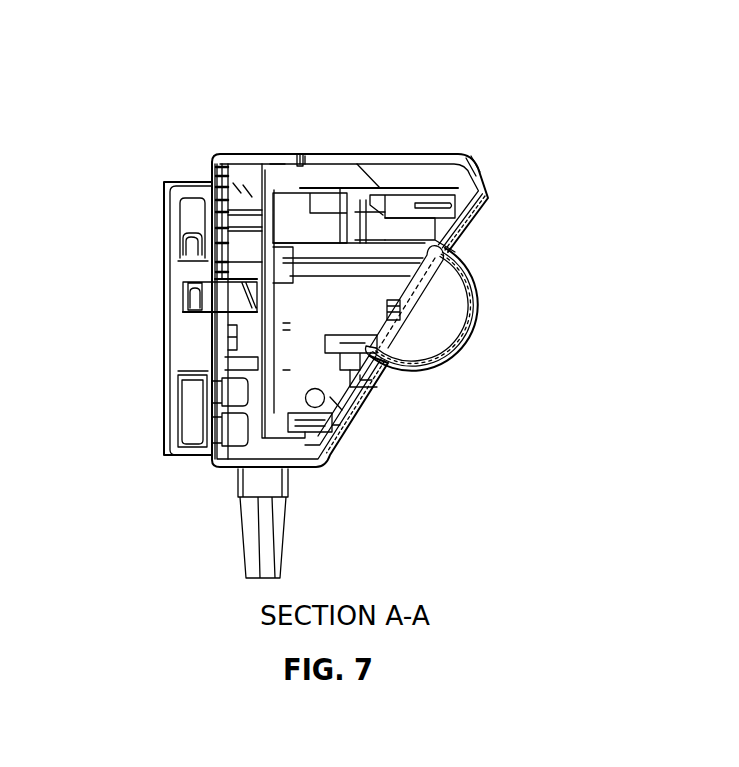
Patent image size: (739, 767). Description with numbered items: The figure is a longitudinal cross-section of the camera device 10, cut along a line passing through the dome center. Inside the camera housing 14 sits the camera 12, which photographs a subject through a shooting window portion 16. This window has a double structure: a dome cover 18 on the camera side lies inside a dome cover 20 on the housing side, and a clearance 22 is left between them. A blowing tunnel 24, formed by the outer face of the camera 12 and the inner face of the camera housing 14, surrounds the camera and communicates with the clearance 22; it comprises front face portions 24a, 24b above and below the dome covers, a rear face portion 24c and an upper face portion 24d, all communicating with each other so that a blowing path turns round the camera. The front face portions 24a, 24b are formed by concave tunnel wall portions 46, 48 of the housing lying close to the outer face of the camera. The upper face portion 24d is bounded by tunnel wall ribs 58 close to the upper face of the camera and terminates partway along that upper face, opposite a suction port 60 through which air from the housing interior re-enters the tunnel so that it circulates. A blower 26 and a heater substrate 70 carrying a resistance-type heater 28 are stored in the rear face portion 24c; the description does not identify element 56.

The camera device 10 is at (524, 106).
The camera 12 is at (348, 437).
The camera housing 14 is at (350, 152).
The shooting window portion 16 is at (490, 310).
The dome cover 18 is at (475, 330).
The dome cover 20 is at (463, 343).
The clearance 22 is at (450, 350).
The blowing tunnel 24 is at (353, 430).
The front face portion 24a is at (472, 237).
The front face portion 24b is at (360, 407).
The rear face portion 24c is at (217, 170).
The upper face portion 24d is at (386, 173).
The blower 26 is at (218, 293).
The heater 28 is at (245, 427).
The tunnel wall portion 46 is at (483, 216).
The tunnel wall portion 48 is at (370, 390).
The elastic piece 56 is at (249, 192).
The tunnel wall rib 58 is at (427, 173).
The suction port 60 is at (278, 165).
The heater substrate 70 is at (226, 346).